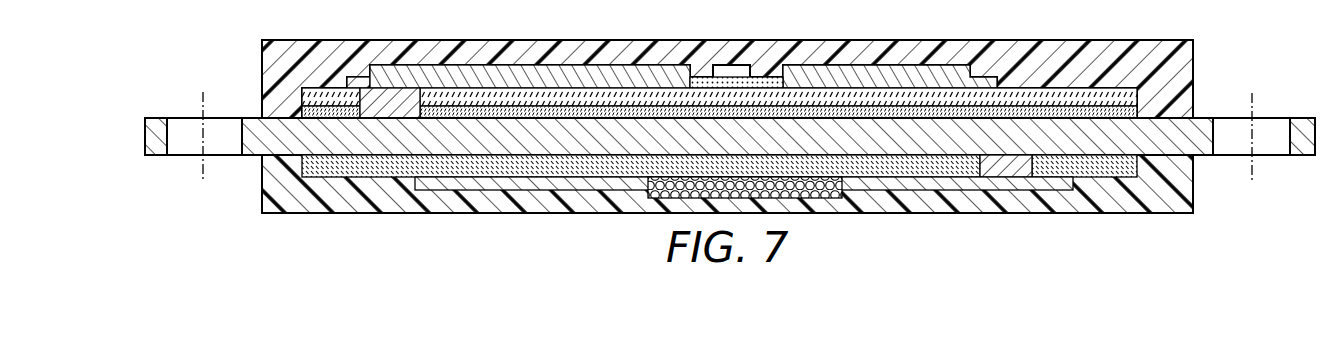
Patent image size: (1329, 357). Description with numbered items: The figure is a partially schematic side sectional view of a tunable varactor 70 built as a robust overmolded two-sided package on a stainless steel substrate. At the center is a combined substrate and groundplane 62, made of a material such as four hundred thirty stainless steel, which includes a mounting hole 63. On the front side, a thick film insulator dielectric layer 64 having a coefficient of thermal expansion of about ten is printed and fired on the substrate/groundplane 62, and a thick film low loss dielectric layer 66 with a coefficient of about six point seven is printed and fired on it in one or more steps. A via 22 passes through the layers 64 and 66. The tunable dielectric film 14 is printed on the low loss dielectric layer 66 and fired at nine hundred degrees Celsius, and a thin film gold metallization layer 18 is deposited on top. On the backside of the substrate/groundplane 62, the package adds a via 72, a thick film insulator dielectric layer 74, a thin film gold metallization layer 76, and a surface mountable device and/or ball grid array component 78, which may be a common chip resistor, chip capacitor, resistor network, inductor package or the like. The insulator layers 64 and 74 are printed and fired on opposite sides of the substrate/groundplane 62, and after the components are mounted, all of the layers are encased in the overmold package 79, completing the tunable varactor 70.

The tunable varactor 70 is at (222, 38).
The tunable dielectric film 14 is at (735, 80).
The thin film gold metallization layer 18 is at (860, 75).
The via 22 is at (390, 112).
The substrate/groundplane 62 is at (1203, 117).
The mounting hole 63 is at (240, 135).
The thick film insulator dielectric layer 64 is at (1100, 112).
The thick film low loss dielectric layer 66 is at (1072, 96).
The via 72 is at (998, 172).
The thick film insulator dielectric layer 74 is at (1095, 182).
The thin film gold metallization layer 76 is at (905, 184).
The surface mountable device and/or ball grid array component 78 is at (812, 194).
The overmold package 79 is at (465, 202).